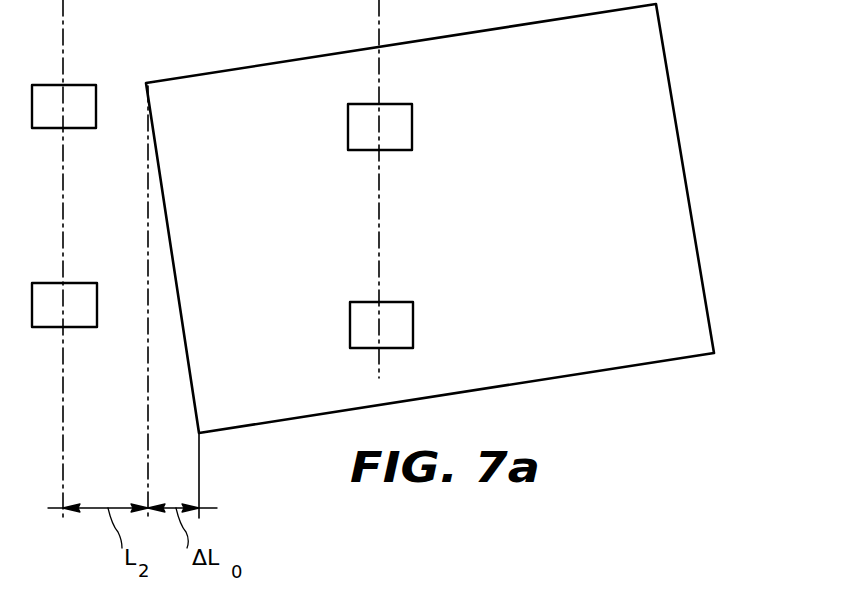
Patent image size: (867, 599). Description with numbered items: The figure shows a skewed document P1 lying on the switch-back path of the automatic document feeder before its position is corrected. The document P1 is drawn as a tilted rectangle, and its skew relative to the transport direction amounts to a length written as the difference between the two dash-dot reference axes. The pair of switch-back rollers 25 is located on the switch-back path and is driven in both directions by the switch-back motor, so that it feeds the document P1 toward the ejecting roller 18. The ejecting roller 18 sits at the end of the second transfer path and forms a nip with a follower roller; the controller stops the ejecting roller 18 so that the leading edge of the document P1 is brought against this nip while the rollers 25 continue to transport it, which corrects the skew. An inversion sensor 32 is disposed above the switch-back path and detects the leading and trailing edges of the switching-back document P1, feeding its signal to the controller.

The ejecting roller 18 is at (78, 85).
The switch-back rollers 25 is at (412, 124).
The inversion sensor 32 is at (106, 210).
The document P1 is at (680, 136).